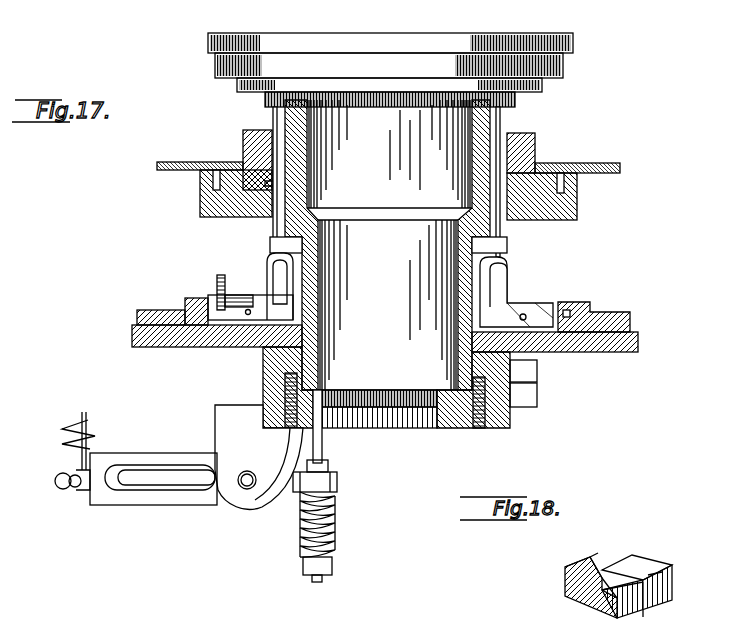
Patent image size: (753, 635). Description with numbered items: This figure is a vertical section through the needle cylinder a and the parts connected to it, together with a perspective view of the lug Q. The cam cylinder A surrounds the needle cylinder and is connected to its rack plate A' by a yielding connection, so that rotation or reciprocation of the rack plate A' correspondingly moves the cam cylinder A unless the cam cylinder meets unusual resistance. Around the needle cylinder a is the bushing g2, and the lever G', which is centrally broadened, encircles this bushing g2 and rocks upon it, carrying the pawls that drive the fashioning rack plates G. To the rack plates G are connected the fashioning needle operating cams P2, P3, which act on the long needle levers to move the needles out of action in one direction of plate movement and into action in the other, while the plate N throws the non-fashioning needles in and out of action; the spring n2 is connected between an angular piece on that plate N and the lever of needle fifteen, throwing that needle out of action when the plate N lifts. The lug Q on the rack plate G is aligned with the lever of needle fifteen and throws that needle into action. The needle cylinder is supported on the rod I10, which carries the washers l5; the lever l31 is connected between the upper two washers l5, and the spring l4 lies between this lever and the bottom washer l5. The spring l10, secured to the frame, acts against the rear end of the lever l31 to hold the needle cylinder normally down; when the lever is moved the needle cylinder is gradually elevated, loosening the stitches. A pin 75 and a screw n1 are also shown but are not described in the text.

In FIG. 17, the needle cylinder a is at (500, 108).
In FIG. 17, the cam cylinder A is at (388, 264).
In FIG. 17, the rack plate for operating the cam cylinder A' is at (388, 155).
In FIG. 17, the rack plate G is at (388, 319).
In FIG. 18, the rack plate G is at (581, 578).
In FIG. 17, the lever G' is at (359, 387).
In FIG. 17, the bushing g2 is at (265, 358).
In FIG. 17, the fashioning needle operating cam P2 is at (190, 298).
In FIG. 18, the fashioning needle operating cam P2 is at (632, 567).
In FIG. 17, the fashioning needle operating cam P3 is at (580, 303).
In FIG. 17, the plate for throwing the non-fashioning needles in and out of action N is at (558, 303).
In FIG. 17, the screw n1 is at (218, 282).
In FIG. 17, the spring n2 is at (273, 255).
In FIG. 17, the pin 75 is at (250, 308).
In FIG. 17, the lug Q is at (224, 298).
In FIG. 18, the lug Q is at (672, 576).
In FIG. 17, the rod I10 is at (325, 469).
In FIG. 17, the washers l5 is at (334, 488).
In FIG. 17, the spring l4 is at (336, 521).
In FIG. 17, the lever l31 is at (205, 495).
In FIG. 17, the spring l10 is at (82, 418).